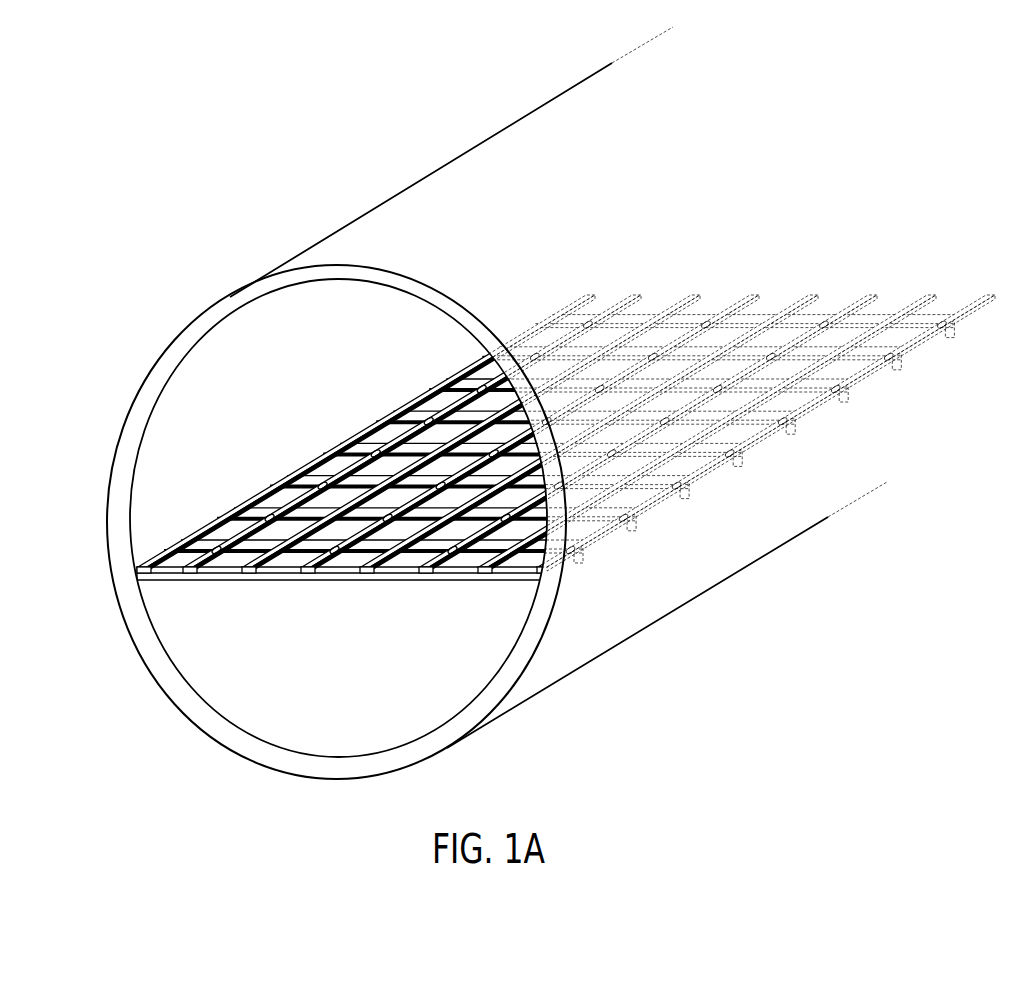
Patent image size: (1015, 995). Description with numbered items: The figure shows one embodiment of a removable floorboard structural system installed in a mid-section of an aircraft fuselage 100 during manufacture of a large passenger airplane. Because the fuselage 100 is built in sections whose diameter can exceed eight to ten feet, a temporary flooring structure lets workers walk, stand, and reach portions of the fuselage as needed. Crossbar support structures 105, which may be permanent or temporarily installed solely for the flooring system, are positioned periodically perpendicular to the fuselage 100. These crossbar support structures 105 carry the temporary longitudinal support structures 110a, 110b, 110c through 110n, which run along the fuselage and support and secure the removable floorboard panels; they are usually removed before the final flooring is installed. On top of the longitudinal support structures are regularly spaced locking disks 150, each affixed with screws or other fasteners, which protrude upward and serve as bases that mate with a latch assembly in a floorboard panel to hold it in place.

The fuselage 100 is at (347, 223).
The crossbar support structures 105 is at (732, 467).
The longitudinal support structure 110a is at (165, 564).
The longitudinal support structure 110b is at (202, 572).
The longitudinal support structure 110c is at (254, 573).
The longitudinal support structure 110n is at (512, 573).
The locking disk 150 is at (322, 486).